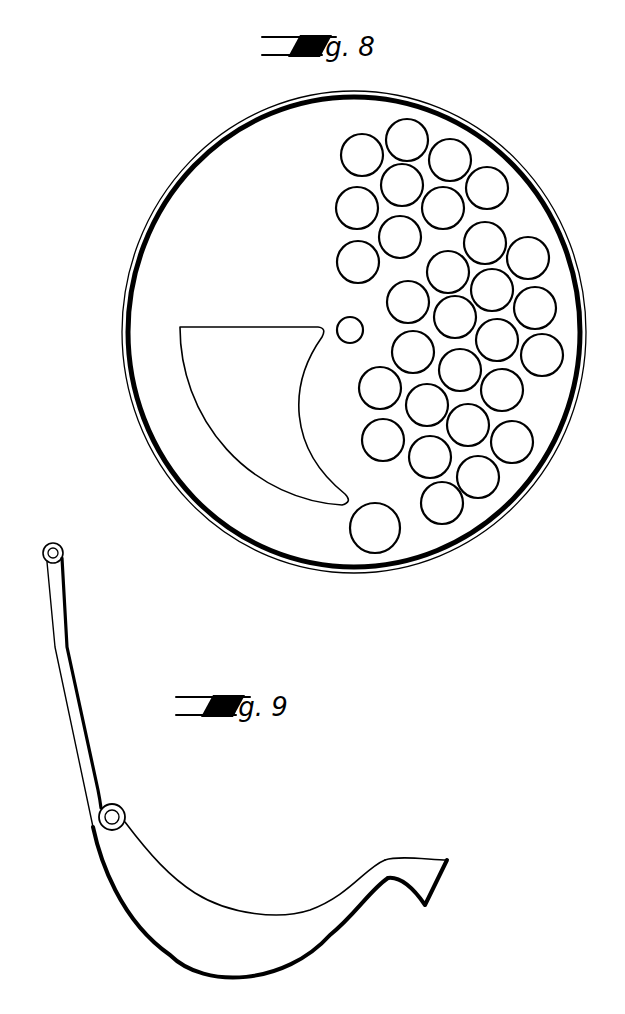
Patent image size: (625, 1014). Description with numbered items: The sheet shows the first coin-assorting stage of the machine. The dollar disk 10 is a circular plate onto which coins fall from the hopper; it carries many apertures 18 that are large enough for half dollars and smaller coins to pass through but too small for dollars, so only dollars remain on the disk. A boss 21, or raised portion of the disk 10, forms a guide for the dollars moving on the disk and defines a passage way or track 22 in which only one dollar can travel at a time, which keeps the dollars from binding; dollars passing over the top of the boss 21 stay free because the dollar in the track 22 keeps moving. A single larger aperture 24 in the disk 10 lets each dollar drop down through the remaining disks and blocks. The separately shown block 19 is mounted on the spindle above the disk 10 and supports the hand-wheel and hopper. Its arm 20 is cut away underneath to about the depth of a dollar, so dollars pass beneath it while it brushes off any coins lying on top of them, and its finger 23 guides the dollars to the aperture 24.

In FIG. 8, the dollar disk 10 is at (137, 310).
In FIG. 8, the apertures 18 is at (413, 127).
In FIG. 8, the boss 21 is at (222, 334).
In FIG. 8, the track 22 is at (178, 465).
In FIG. 8, the aperture 24 is at (383, 547).
In FIG. 9, the arm 20 is at (88, 747).
In FIG. 9, the block 19 is at (205, 905).
In FIG. 9, the finger 23 is at (400, 865).